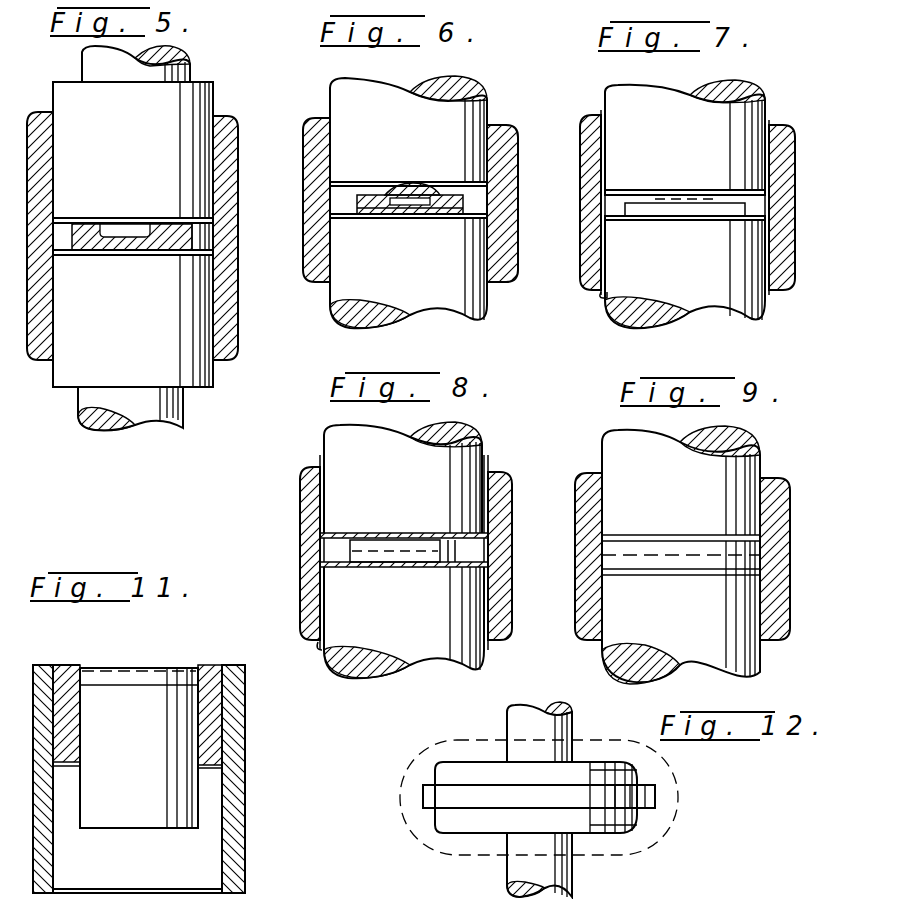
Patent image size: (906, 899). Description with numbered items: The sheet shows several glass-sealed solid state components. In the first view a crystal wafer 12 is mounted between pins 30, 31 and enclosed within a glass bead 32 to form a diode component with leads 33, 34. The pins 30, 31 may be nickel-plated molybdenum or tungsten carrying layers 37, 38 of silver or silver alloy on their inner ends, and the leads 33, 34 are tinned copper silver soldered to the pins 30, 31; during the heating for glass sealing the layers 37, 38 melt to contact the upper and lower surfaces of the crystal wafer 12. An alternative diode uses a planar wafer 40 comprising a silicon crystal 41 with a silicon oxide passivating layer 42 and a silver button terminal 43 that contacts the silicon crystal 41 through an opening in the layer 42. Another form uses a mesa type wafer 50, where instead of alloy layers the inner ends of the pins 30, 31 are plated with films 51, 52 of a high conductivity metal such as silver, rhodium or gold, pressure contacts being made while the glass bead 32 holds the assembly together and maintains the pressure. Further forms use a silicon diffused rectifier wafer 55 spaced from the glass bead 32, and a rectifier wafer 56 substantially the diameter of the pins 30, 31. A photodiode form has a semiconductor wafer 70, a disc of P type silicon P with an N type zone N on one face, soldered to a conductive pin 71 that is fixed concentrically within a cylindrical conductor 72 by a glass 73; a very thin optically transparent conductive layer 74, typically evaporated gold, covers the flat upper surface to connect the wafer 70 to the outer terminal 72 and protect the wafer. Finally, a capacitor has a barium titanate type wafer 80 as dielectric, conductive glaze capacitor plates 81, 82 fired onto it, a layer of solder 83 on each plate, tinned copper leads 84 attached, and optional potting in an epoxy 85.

In FIG. 5, the crystal wafer 12 is at (100, 242).
In FIG. 5, the pin 30 is at (183, 160).
In FIG. 6, the pin 30 is at (463, 112).
In FIG. 7, the pin 30 is at (737, 117).
In FIG. 8, the pin 30 is at (352, 442).
In FIG. 9, the pin 30 is at (628, 458).
In FIG. 5, the pin 31 is at (182, 370).
In FIG. 6, the pin 31 is at (452, 298).
In FIG. 7, the pin 31 is at (730, 307).
In FIG. 8, the pin 31 is at (420, 647).
In FIG. 9, the pin 31 is at (618, 642).
In FIG. 5, the glass bead 32 is at (222, 300).
In FIG. 6, the glass bead 32 is at (498, 234).
In FIG. 7, the glass bead 32 is at (777, 188).
In FIG. 8, the glass bead 32 is at (312, 503).
In FIG. 9, the glass bead 32 is at (583, 540).
In FIG. 5, the lead 33 is at (172, 71).
In FIG. 5, the lead 34 is at (160, 407).
In FIG. 5, the silver alloy layer 37 is at (202, 207).
In FIG. 6, the silver alloy layer 37 is at (488, 183).
In FIG. 9, the silver alloy layer 37 is at (648, 535).
In FIG. 5, the silver alloy layer 38 is at (202, 253).
In FIG. 6, the silver alloy layer 38 is at (477, 215).
In FIG. 9, the silver alloy layer 38 is at (648, 576).
In FIG. 6, the planar wafer 40 is at (447, 210).
In FIG. 6, the silicon crystal 41 is at (382, 210).
In FIG. 6, the silicon oxide passivating layer 42 is at (452, 192).
In FIG. 6, the silver button terminal 43 is at (405, 183).
In FIG. 7, the mesa type wafer 50 is at (683, 208).
In FIG. 7, the film 51 is at (603, 113).
In FIG. 8, the film 51 is at (488, 460).
In FIG. 7, the film 52 is at (602, 293).
In FIG. 8, the film 52 is at (318, 638).
In FIG. 8, the silicon diffused rectifier wafer 55 is at (388, 556).
In FIG. 9, the rectifier wafer 56 is at (713, 562).
In FIG. 11, the semiconductor wafer 70 is at (120, 678).
In FIG. 11, the conductive pin 71 is at (183, 808).
In FIG. 11, the cylindrical conductor 72 is at (232, 750).
In FIG. 11, the glass 73 is at (208, 702).
In FIG. 11, the conductive layer 74 is at (55, 663).
In FIG. 12, the wafer 80 is at (633, 798).
In FIG. 12, the capacitor plate 81 is at (645, 778).
In FIG. 12, the capacitor plate 82 is at (643, 813).
In FIG. 12, the layer of solder 83 is at (597, 770).
In FIG. 12, the tinned copper lead 84 is at (522, 722).
In FIG. 12, the epoxy 85 is at (437, 853).
In FIG. 11, the N type zone N is at (132, 665).
In FIG. 11, the P type silicon P is at (140, 677).